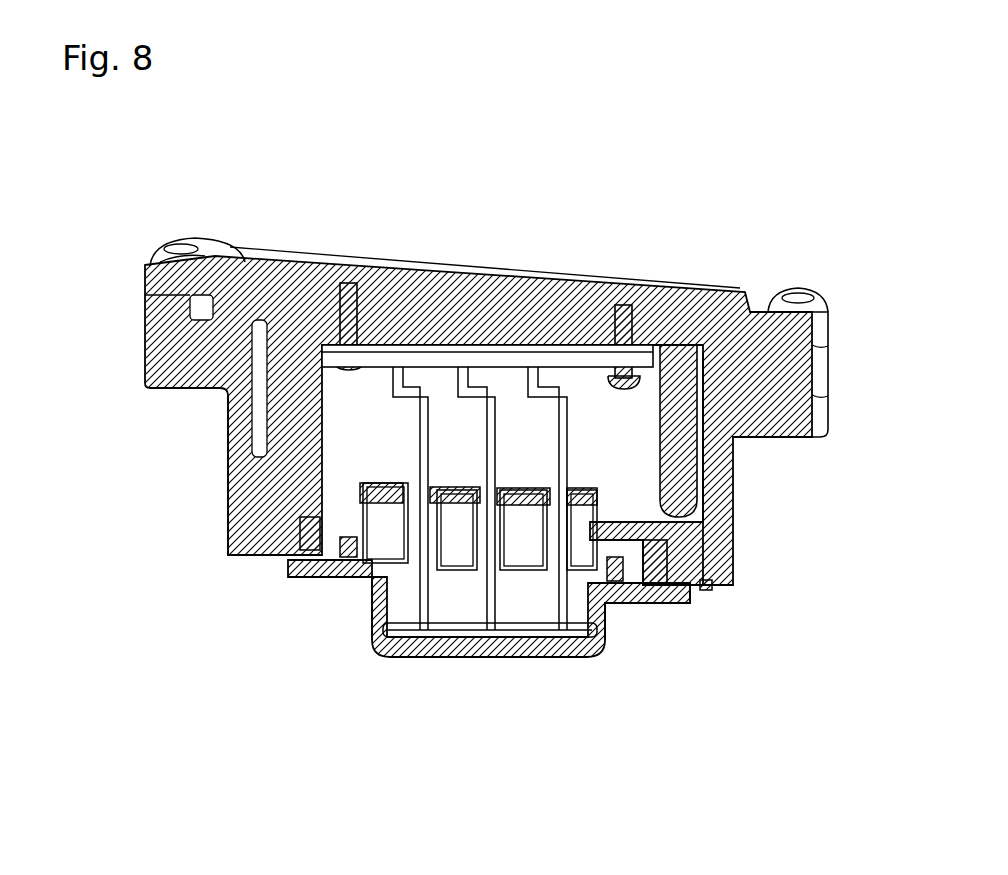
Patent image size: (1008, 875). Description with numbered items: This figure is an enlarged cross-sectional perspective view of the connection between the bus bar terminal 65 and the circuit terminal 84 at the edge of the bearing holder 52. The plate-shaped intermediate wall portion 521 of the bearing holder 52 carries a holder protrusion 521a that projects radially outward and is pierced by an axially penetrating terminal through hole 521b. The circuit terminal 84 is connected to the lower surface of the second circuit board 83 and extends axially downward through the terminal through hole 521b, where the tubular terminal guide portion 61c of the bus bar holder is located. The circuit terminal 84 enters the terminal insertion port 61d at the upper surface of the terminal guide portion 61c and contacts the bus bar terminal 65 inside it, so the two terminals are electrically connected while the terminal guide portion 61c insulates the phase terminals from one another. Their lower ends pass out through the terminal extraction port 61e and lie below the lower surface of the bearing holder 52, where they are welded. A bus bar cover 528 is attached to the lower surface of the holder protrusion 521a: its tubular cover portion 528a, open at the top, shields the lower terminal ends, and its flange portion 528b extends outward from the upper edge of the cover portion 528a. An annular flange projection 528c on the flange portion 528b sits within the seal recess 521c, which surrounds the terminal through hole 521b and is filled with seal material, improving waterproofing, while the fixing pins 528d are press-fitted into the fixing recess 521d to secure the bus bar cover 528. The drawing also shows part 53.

The bearing holder 52 is at (790, 390).
The top plate of cap 53 is at (712, 330).
The intermediate wall portion 521 is at (265, 548).
The holder protrusion 521a is at (255, 515).
The terminal through hole 521b is at (267, 457).
The seal recess 521c is at (620, 540).
The fixing recess 521d is at (655, 540).
The bus bar cover 528 is at (557, 660).
The cover portion 528a is at (520, 665).
The flange portion 528b is at (677, 603).
The flange projection 528c is at (623, 603).
The fixing pins 528d is at (705, 590).
The terminal guide portion 61c is at (333, 577).
The terminal insertion port 61d is at (407, 483).
The terminal extraction port 61e is at (387, 572).
The bus bar terminal 65 is at (477, 652).
The second circuit board 83 is at (410, 350).
The circuit terminal 84 is at (570, 430).